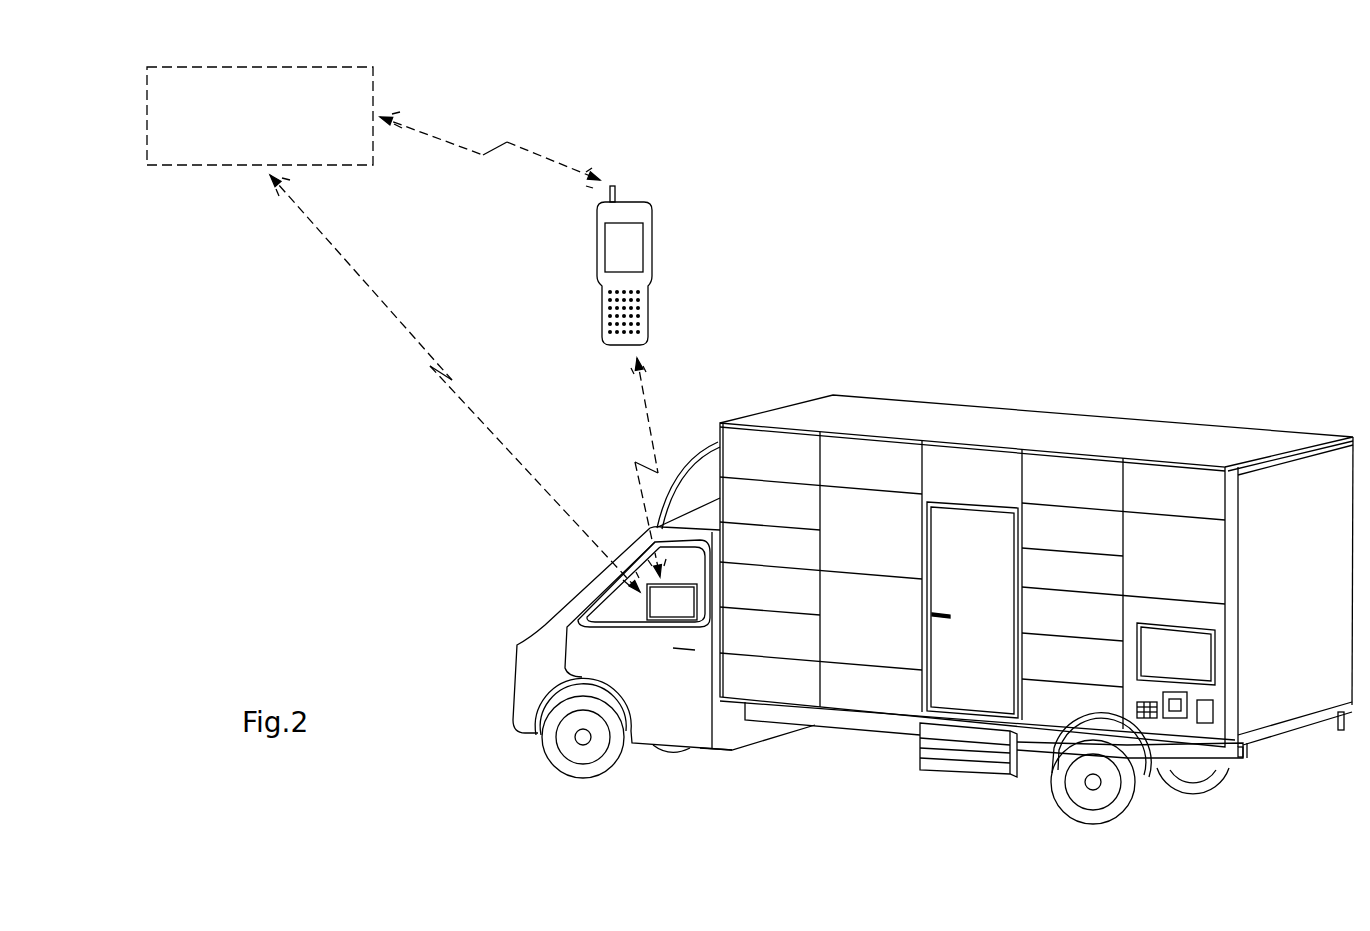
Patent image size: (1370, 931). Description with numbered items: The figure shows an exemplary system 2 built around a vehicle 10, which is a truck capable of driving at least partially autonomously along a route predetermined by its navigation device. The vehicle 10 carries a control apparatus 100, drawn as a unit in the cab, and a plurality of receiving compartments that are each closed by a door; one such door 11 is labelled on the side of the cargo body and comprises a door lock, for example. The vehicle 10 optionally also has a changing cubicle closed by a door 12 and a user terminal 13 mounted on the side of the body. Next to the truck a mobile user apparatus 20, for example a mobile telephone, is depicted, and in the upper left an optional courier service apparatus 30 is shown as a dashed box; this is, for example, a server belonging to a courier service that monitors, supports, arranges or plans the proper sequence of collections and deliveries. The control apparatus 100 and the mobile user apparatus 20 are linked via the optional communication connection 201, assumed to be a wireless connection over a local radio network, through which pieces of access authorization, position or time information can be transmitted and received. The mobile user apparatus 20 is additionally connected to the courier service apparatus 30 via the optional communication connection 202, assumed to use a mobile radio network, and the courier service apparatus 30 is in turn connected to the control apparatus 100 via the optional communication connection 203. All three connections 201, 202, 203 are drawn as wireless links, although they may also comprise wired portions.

The system 2 is at (778, 120).
The vehicle 10 is at (933, 597).
The door 11 is at (867, 448).
The door 12 is at (972, 513).
The user terminal 13 is at (1177, 610).
The mobile user apparatus 20 is at (653, 232).
The courier service apparatus 30 is at (246, 125).
The control apparatus 100 is at (663, 620).
The communication connection 201 is at (647, 410).
The communication connection 202 is at (453, 132).
The communication connection 203 is at (375, 288).